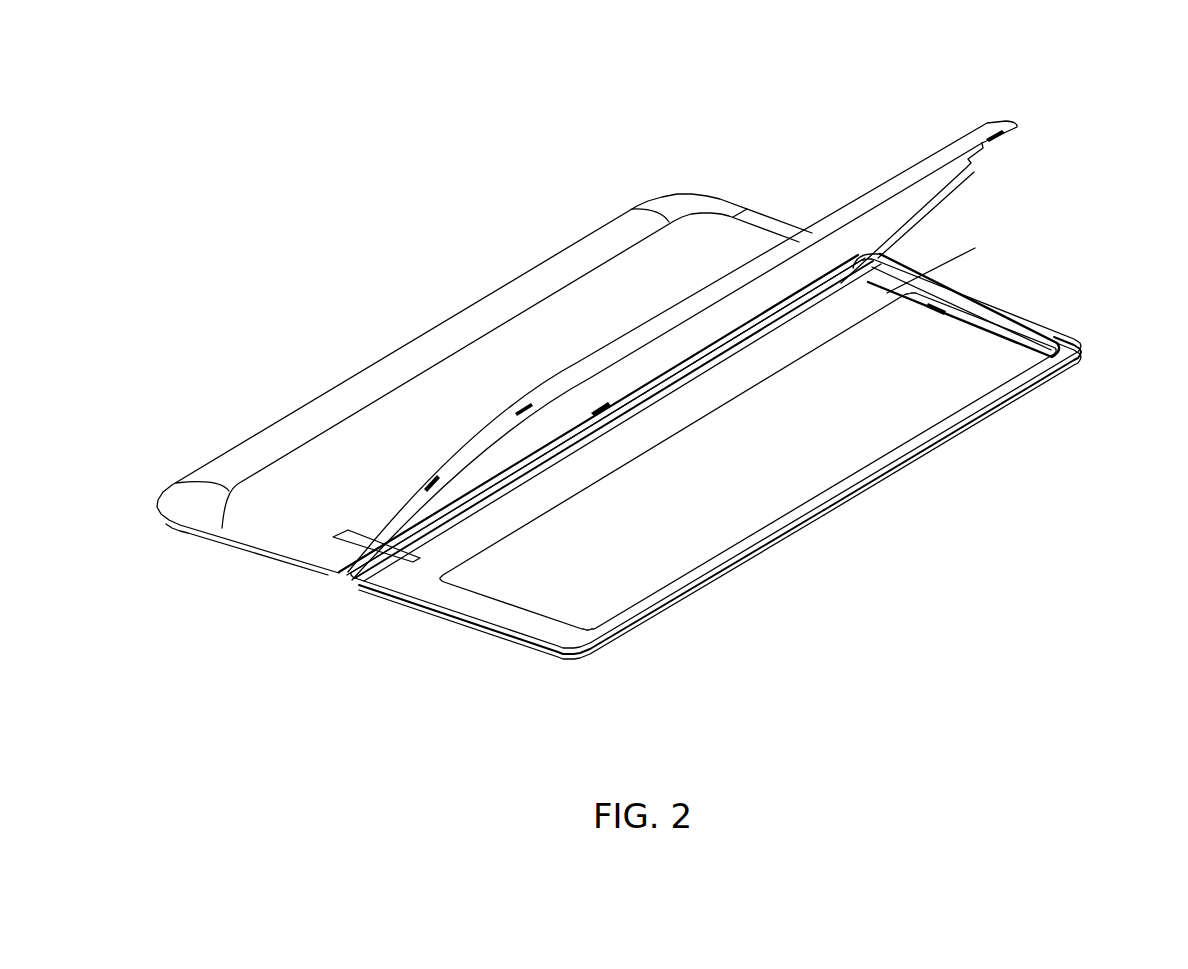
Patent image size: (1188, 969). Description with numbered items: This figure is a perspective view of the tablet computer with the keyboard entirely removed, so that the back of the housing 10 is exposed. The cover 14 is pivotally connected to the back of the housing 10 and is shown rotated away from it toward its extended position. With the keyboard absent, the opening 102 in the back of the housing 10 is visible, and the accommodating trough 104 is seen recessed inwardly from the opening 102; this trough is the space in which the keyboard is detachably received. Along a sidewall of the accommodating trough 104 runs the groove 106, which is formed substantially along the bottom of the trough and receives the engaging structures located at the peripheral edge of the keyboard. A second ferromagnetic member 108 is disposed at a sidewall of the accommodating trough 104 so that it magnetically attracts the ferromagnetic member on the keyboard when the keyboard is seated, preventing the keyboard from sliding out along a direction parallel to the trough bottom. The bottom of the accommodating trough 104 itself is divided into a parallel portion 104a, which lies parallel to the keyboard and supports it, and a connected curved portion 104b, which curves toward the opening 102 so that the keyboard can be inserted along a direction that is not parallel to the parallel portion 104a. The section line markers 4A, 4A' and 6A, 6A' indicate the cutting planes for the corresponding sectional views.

The housing 10 is at (505, 288).
The cover 14 is at (898, 176).
The opening 102 is at (930, 438).
The accommodating trough 104 is at (1090, 333).
The parallel portion 104a is at (803, 493).
The curved portion 104b is at (507, 612).
The groove 106 is at (862, 258).
The second ferromagnetic member 108 is at (983, 290).
The section line 4A is at (398, 633).
The section line 4A' is at (967, 270).
The section line 6A is at (321, 575).
The section line 6A' is at (354, 605).